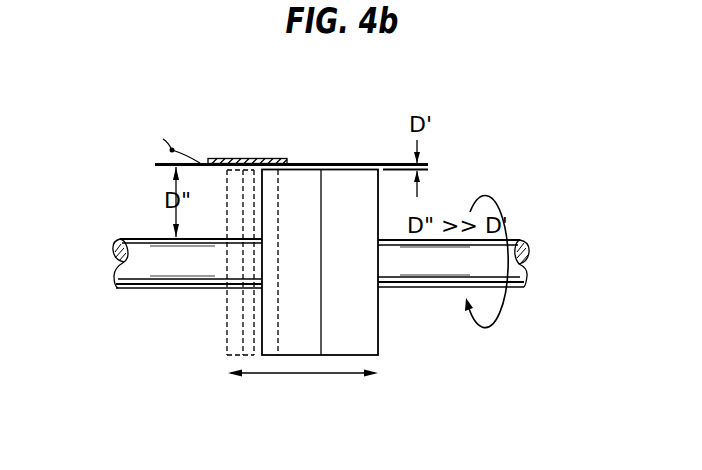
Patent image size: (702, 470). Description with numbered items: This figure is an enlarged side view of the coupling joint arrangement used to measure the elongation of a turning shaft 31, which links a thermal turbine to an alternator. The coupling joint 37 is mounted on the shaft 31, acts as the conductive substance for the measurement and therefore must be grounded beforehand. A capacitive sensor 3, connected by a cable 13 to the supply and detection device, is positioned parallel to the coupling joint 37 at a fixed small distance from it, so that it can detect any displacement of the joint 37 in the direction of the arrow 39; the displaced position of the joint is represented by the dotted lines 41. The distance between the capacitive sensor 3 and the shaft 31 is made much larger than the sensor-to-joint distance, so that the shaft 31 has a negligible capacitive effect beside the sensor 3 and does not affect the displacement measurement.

The capacitive sensor 3 is at (240, 158).
The cable 13 is at (172, 150).
The turning shaft 31 is at (512, 283).
The coupling joint 37 is at (358, 333).
The arrow 39 is at (316, 374).
The dotted lines 41 is at (233, 321).